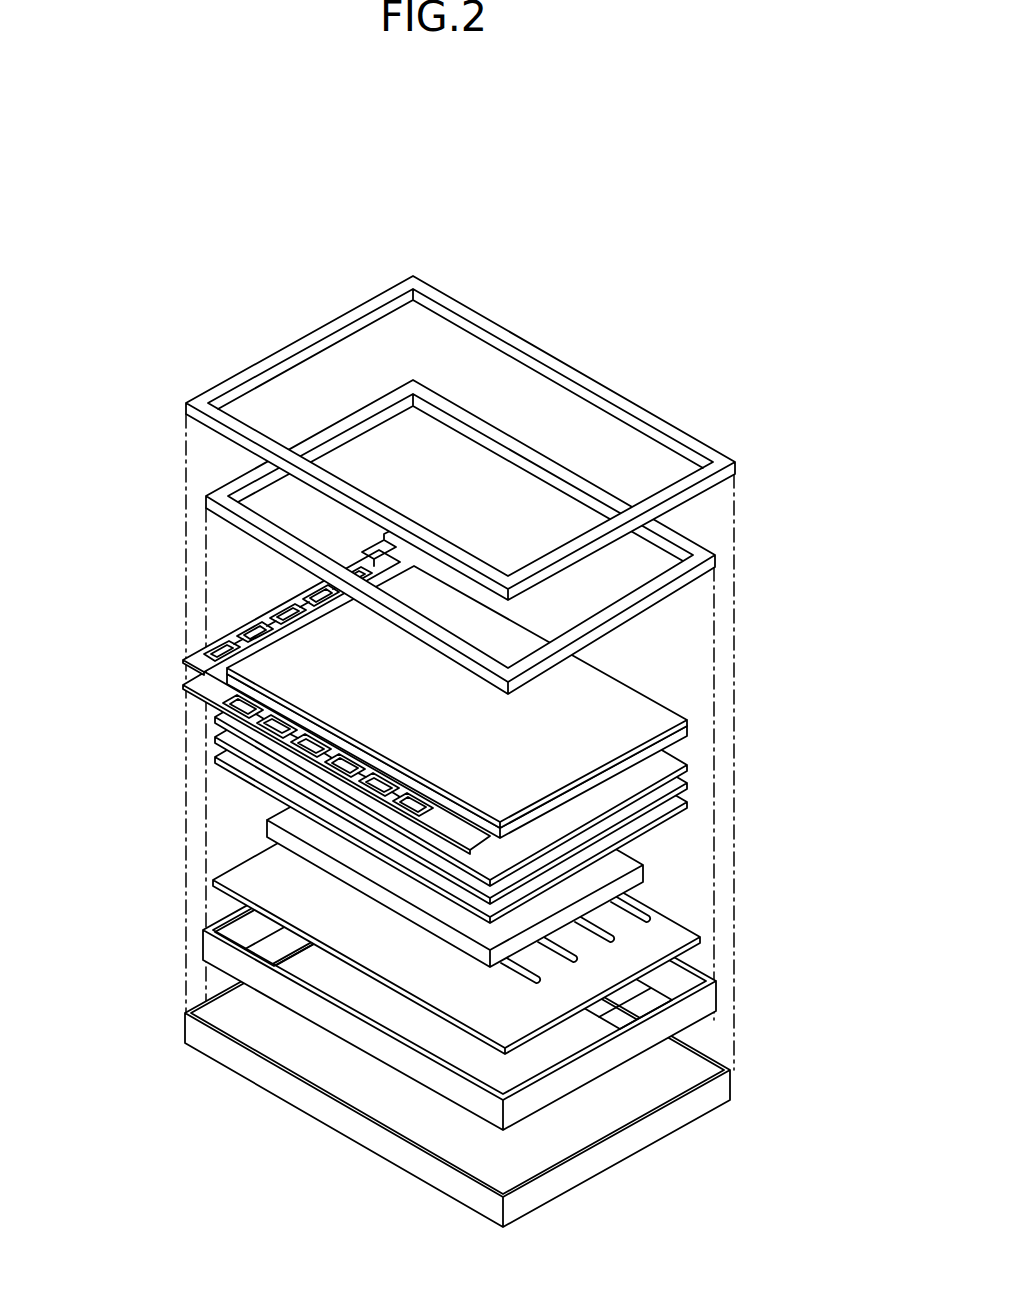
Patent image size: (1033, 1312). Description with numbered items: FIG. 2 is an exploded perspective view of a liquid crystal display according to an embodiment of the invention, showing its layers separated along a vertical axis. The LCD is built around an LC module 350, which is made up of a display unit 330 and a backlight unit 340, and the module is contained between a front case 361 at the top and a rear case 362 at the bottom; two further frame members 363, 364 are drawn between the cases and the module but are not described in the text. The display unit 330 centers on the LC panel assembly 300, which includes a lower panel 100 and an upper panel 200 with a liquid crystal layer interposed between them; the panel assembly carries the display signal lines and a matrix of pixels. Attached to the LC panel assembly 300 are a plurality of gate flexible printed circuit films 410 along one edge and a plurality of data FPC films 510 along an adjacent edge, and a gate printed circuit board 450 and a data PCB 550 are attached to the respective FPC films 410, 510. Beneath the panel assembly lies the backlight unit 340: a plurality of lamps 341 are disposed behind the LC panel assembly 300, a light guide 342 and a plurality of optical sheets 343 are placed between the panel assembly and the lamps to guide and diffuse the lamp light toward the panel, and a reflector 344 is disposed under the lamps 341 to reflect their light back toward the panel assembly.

The lower panel 100 is at (687, 742).
The upper panel 200 is at (690, 729).
The LC panel assembly 300 is at (640, 722).
The display unit 330 is at (628, 670).
The backlight unit 340 is at (830, 765).
The lamps 341 is at (653, 908).
The light guide 342 is at (650, 882).
The optical sheets 343 is at (738, 765).
The reflector 344 is at (642, 947).
The LC module 350 is at (78, 500).
The front case 361 is at (497, 329).
The rear case 362 is at (613, 1147).
The upper mold frame 363 is at (670, 584).
The lower mold frame 364 is at (637, 1048).
The gate flexible printed circuit films 410 is at (185, 682).
The gate printed circuit board 450 is at (220, 708).
The data FPC films 510 is at (257, 630).
The data PCB 550 is at (291, 613).